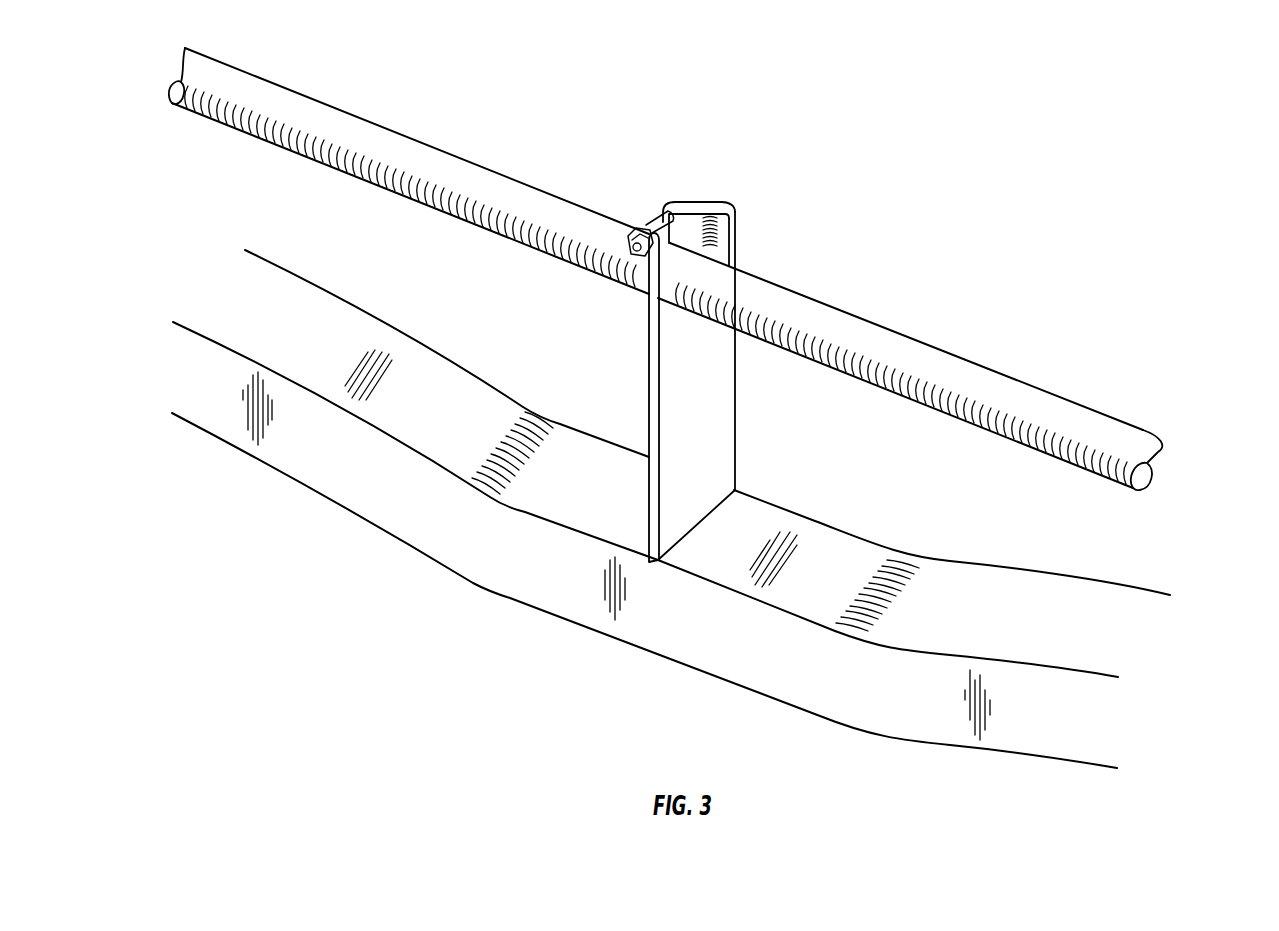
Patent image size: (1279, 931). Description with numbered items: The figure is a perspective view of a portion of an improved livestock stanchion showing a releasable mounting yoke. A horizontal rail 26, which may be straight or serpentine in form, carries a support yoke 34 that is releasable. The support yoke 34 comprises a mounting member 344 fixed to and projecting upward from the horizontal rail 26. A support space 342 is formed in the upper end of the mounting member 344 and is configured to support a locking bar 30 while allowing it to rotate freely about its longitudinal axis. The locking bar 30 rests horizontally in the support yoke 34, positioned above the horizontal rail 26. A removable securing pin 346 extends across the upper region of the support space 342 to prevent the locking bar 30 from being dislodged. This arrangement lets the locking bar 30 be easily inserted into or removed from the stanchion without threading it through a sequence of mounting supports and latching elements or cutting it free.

The horizontal rail 26 is at (303, 288).
The locking bar 30 is at (383, 137).
The support yoke 34 is at (725, 398).
The support space 342 is at (688, 223).
The mounting member 344 is at (648, 372).
The removable securing pin 346 is at (655, 220).